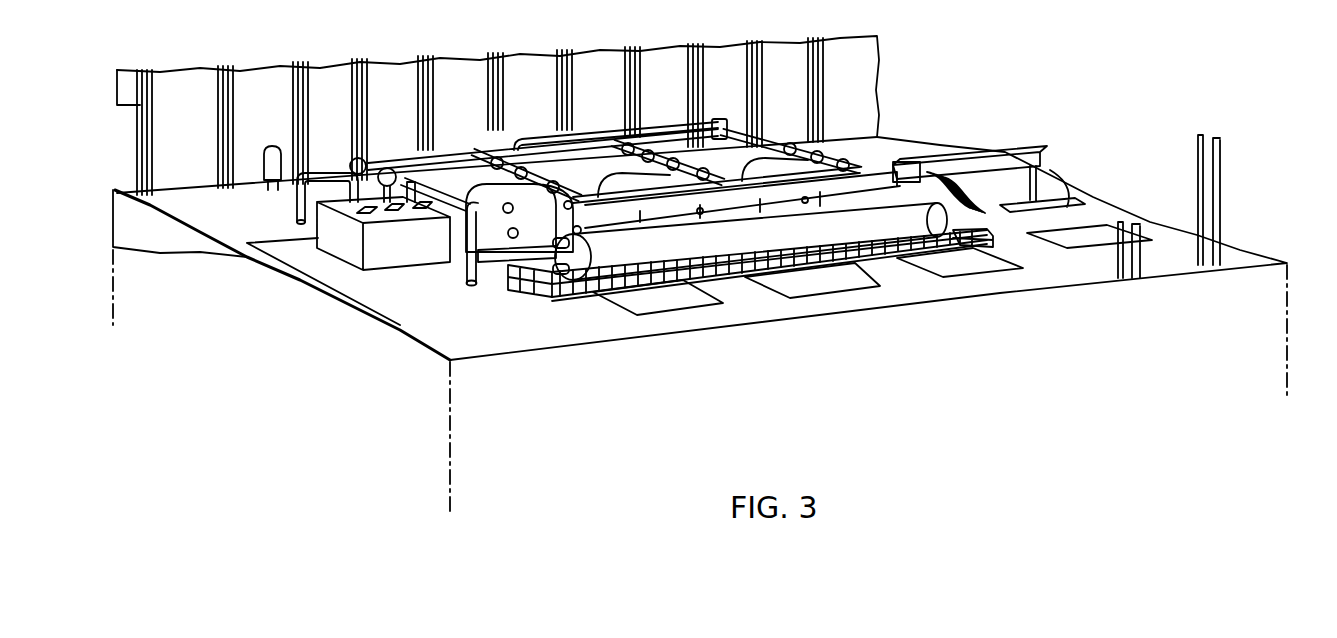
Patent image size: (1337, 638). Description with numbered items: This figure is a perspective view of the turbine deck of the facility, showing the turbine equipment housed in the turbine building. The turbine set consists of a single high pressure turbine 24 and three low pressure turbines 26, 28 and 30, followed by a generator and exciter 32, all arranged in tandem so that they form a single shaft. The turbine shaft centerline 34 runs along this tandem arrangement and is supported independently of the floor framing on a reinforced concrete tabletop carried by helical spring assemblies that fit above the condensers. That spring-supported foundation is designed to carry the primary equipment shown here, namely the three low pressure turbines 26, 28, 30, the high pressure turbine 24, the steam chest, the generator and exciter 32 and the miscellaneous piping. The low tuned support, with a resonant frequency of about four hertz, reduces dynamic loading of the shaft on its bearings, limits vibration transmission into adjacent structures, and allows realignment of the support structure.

The high pressure turbine 24 is at (418, 257).
The low pressure turbine 26 is at (556, 229).
The low pressure turbine 28 is at (704, 216).
The low pressure turbine 30 is at (838, 201).
The generator and exciter 32 is at (1012, 193).
The turbine shaft centerline 34 is at (457, 237).